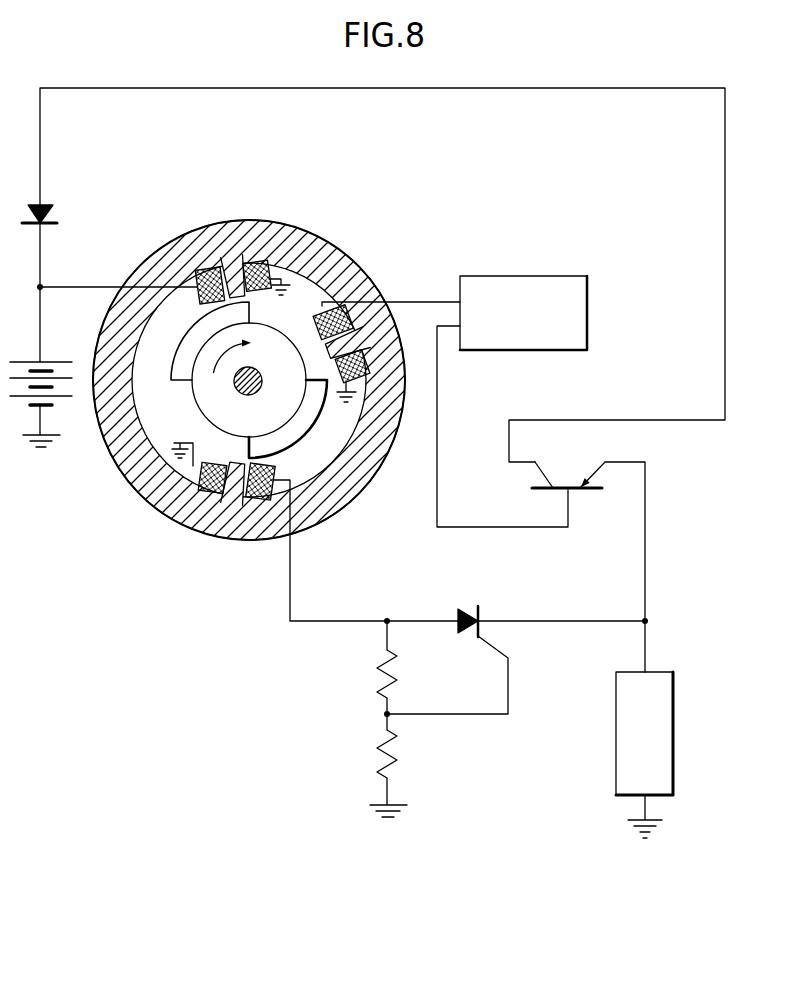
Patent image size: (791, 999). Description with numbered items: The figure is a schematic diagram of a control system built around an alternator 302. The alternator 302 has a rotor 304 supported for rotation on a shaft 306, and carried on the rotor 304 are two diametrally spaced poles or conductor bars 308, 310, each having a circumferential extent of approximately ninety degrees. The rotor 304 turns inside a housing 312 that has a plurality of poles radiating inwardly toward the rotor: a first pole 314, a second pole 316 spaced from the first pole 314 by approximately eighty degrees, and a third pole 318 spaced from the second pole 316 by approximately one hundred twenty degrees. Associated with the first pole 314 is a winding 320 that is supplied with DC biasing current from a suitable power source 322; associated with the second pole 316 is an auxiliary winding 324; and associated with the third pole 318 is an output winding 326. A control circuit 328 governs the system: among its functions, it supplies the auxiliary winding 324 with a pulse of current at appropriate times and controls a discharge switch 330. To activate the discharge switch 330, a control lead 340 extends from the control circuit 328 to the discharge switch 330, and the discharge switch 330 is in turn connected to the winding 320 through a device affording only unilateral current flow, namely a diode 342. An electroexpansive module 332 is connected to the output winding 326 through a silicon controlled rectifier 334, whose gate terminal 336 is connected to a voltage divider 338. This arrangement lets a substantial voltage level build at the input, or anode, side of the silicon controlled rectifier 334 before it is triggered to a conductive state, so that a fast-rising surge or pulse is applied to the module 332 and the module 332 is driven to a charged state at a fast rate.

The alternator 302 is at (140, 504).
The rotor 304 is at (203, 403).
The shaft 306 is at (234, 388).
The conductor bar 308 is at (181, 351).
The conductor bar 310 is at (294, 438).
The housing 312 is at (181, 253).
The first pole 314 is at (232, 280).
The second pole 316 is at (332, 350).
The third pole 318 is at (236, 500).
The winding 320 is at (262, 259).
The power source 322 is at (64, 400).
The auxiliary winding 324 is at (362, 374).
The output winding 326 is at (200, 503).
The control circuit 328 is at (506, 276).
The discharge switch 330 is at (540, 477).
The electroexpansive module 332 is at (674, 777).
The silicon controlled rectifier 334 is at (463, 612).
The gate terminal 336 is at (497, 650).
The voltage divider 338 is at (365, 714).
The control lead 340 is at (438, 375).
The diode 342 is at (50, 212).